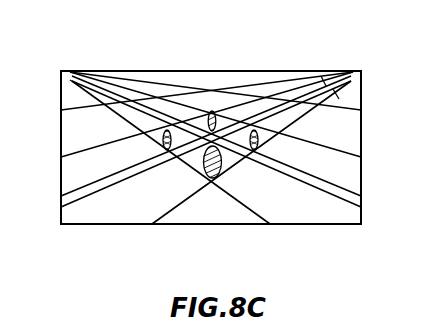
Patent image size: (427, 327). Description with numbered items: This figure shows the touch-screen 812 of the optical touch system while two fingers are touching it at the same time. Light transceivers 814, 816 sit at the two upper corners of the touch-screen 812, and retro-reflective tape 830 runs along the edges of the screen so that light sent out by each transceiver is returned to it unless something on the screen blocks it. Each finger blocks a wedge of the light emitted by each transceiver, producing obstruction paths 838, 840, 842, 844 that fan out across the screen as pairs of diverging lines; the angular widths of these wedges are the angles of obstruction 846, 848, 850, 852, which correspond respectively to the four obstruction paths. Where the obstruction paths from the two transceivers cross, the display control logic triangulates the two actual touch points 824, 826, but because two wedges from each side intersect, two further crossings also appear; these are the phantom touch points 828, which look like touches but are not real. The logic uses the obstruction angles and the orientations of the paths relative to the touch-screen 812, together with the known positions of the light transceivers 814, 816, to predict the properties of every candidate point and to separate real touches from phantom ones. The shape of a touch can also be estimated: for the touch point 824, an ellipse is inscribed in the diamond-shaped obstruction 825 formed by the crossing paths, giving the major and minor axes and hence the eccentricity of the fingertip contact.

The touch-screen 812 is at (225, 92).
The light transceiver 814 is at (68, 72).
The light transceiver 816 is at (357, 70).
The touch point 824 is at (201, 160).
The diamond-shaped obstruction 825 is at (160, 136).
The touch point 826 is at (258, 145).
The phantom touch point 828 is at (215, 135).
The retro-reflective tape 830 is at (132, 69).
The obstruction path 838 is at (140, 96).
The obstruction path 840 is at (118, 120).
The obstruction path 842 is at (263, 100).
The obstruction path 844 is at (305, 112).
The angle of obstruction 846 is at (105, 91).
The angle of obstruction 848 is at (74, 82).
The angle of obstruction 850 is at (322, 79).
The angle of obstruction 852 is at (345, 90).